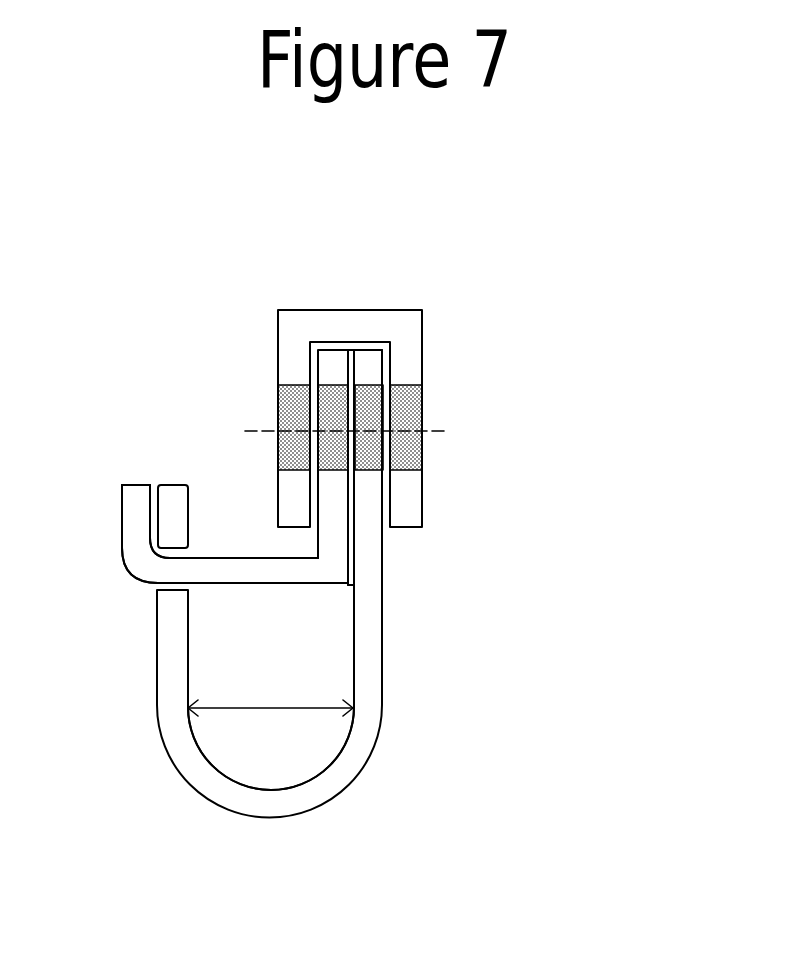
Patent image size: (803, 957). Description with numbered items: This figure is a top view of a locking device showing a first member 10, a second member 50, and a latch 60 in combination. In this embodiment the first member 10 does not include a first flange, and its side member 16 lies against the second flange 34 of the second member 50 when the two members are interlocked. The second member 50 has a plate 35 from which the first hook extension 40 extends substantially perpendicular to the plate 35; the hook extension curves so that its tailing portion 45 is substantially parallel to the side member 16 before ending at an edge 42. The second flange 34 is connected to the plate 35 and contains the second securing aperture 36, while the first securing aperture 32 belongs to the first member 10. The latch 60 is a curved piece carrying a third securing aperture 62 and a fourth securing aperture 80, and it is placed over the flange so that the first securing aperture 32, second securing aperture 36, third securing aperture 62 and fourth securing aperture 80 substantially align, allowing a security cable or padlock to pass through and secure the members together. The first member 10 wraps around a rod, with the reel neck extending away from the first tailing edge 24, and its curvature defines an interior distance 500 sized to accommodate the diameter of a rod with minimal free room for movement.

The first member 10 is at (383, 628).
The side member 16 is at (368, 590).
The first tailing edge 24 is at (177, 483).
The first securing aperture 32 is at (365, 466).
The second flange 34 is at (333, 541).
The plate 35 is at (255, 572).
The second securing aperture 36 is at (330, 476).
The first hook extension 40 is at (130, 543).
The edge 42 is at (138, 483).
The tailing portion 45 is at (128, 523).
The second member 50 is at (123, 475).
The latch 60 is at (282, 335).
The third securing aperture 62 is at (287, 452).
The fourth securing aperture 80 is at (412, 450).
The interior distance 500 is at (255, 705).